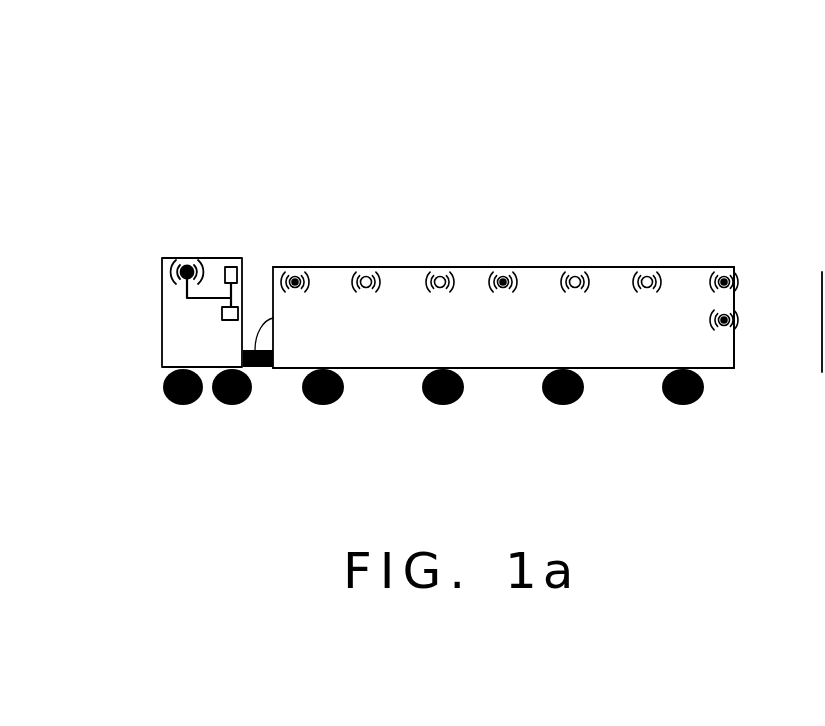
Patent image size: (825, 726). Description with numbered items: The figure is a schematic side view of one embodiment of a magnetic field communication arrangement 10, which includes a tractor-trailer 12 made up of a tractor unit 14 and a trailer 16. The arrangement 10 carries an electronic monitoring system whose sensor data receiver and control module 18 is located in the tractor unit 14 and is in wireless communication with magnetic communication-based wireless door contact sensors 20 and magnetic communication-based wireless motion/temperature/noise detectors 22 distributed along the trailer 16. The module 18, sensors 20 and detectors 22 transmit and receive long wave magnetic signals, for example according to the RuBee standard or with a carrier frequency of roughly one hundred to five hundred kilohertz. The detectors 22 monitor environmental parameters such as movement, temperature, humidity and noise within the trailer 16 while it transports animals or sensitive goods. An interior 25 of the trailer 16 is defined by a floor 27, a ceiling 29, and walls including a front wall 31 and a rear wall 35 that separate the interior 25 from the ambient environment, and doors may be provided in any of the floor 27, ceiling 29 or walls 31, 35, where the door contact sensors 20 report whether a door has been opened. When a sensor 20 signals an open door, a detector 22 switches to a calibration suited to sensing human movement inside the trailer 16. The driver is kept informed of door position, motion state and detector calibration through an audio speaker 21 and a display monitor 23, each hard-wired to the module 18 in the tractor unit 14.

The magnetic field communication arrangement 10 is at (233, 120).
The tractor-trailer 12 is at (600, 125).
The tractor unit 14 is at (219, 352).
The trailer 16 is at (543, 346).
The sensor data receiver and control module 18 is at (190, 258).
The magnetic communication-based wireless door contact sensor 20 is at (295, 268).
The audio speaker 21 is at (232, 266).
The magnetic communication-based wireless motion/temperature/noise detector 22 is at (440, 268).
The display monitor 23 is at (240, 311).
The interior 25 is at (640, 341).
The floor 27 is at (510, 370).
The ceiling 29 is at (470, 267).
The wall 31 is at (255, 368).
The wall 35 is at (735, 347).